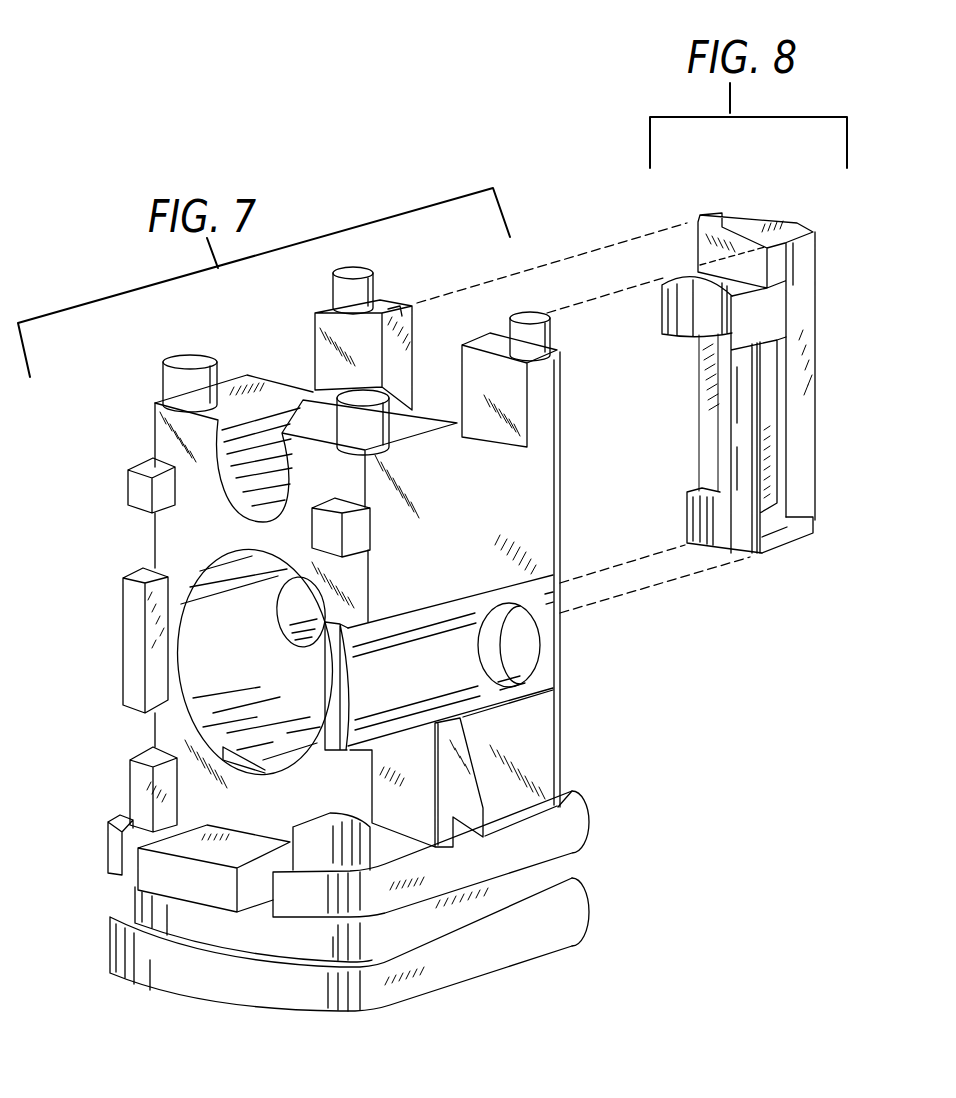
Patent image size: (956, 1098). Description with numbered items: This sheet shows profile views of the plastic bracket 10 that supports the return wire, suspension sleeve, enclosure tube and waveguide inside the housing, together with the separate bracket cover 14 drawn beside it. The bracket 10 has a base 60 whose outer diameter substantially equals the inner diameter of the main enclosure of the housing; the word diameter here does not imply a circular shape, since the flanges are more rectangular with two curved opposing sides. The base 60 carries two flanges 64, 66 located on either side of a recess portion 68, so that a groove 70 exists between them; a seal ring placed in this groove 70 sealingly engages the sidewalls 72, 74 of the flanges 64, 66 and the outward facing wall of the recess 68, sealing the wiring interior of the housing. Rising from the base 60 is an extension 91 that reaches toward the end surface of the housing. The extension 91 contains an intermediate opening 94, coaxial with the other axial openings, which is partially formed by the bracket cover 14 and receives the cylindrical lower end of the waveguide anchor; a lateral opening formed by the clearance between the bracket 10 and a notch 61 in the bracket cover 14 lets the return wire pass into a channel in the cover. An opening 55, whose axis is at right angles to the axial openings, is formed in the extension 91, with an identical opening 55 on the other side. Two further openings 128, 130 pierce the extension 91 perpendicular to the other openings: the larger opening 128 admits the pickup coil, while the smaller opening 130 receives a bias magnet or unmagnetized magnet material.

In FIG. 7, the bracket 10 is at (530, 732).
In FIG. 8, the bracket cover 14 is at (770, 230).
In FIG. 7, the opening 55 is at (313, 618).
In FIG. 7, the base 60 is at (345, 1015).
In FIG. 8, the notch 61 is at (817, 538).
In FIG. 7, the flange 64 is at (567, 923).
In FIG. 7, the flange 66 is at (570, 827).
In FIG. 7, the recess portion 68 is at (523, 897).
In FIG. 7, the groove 70 is at (600, 843).
In FIG. 7, the sidewall 72 is at (480, 933).
In FIG. 7, the sidewall 74 is at (402, 907).
In FIG. 7, the extension 91 is at (560, 455).
In FIG. 8, the intermediate opening 94 is at (700, 313).
In FIG. 7, the opening 128 is at (240, 673).
In FIG. 7, the opening 130 is at (240, 484).